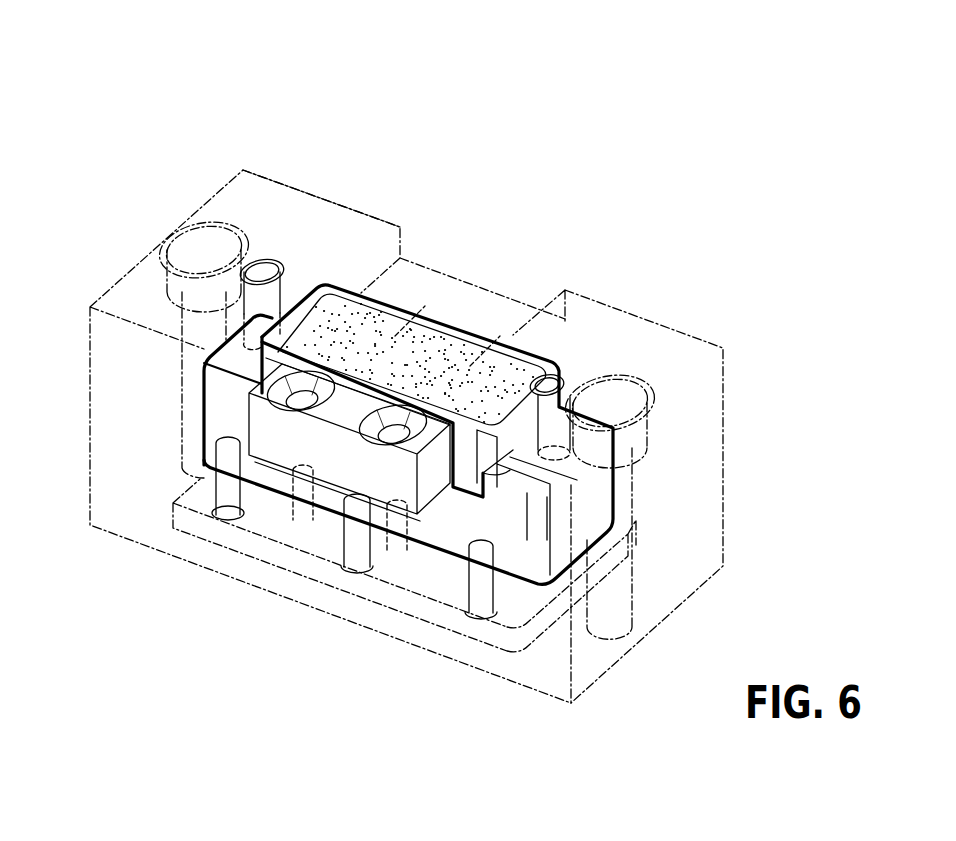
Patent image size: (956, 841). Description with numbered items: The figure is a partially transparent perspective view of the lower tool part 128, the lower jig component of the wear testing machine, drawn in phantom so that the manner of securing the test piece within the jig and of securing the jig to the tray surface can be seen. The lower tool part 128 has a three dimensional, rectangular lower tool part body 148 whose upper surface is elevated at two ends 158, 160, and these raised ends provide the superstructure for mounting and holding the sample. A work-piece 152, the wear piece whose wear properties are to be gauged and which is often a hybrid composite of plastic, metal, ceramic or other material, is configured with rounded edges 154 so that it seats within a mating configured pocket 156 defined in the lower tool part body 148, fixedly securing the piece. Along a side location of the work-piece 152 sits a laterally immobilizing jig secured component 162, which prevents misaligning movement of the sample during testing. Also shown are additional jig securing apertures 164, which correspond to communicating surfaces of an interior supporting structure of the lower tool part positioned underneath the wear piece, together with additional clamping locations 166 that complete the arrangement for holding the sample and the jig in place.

The lower tool part 128 is at (457, 134).
The lower tool part body 148 is at (118, 520).
The work-piece 152 is at (407, 307).
The rounded edges 154 is at (320, 285).
The pocket 156 is at (547, 347).
The elevated end 158 is at (270, 200).
The elevated end 160 is at (660, 343).
The laterally immobilizing jig secured component 162 is at (280, 455).
The jig securing apertures 164 is at (261, 263).
The clamping locations 166 is at (345, 550).